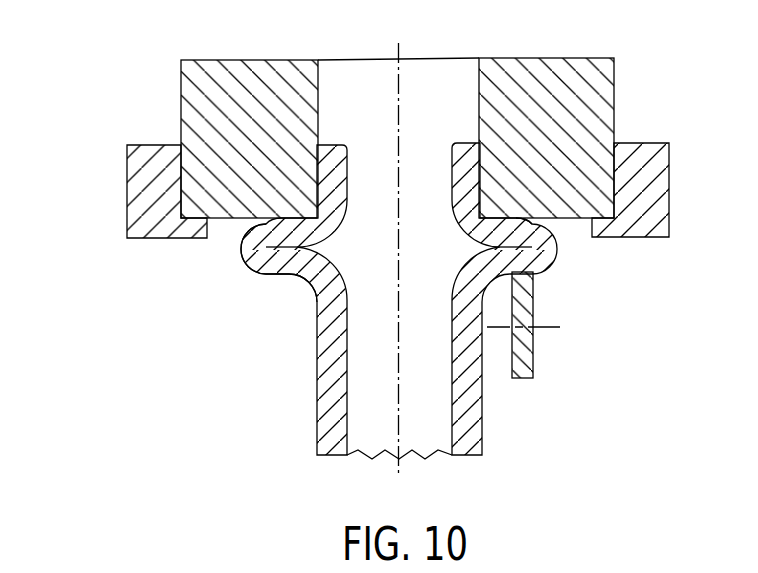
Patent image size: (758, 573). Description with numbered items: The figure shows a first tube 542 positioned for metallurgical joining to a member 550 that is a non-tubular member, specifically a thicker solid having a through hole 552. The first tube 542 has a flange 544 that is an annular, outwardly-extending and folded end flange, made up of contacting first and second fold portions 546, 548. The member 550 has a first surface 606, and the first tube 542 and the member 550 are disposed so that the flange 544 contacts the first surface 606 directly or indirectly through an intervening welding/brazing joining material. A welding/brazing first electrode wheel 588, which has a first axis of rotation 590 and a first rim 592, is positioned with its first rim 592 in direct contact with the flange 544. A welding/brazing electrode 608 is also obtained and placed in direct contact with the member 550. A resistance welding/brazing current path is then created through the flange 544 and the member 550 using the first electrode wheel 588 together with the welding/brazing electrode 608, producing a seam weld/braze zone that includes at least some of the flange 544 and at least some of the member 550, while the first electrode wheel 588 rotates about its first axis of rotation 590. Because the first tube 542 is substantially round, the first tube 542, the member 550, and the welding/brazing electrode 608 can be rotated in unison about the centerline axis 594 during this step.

The first tube 542 is at (482, 382).
The flange 544 is at (259, 273).
The first fold portion 546 is at (290, 262).
The second fold portion 548 is at (288, 238).
The member 550 is at (527, 58).
The through hole 552 is at (430, 63).
The first electrode wheel 588 is at (534, 338).
The first axis of rotation 590 is at (578, 308).
The first rim 592 is at (523, 379).
The centerline axis 594 is at (398, 50).
The first surface 606 is at (575, 219).
The welding/brazing electrode 608 is at (127, 148).